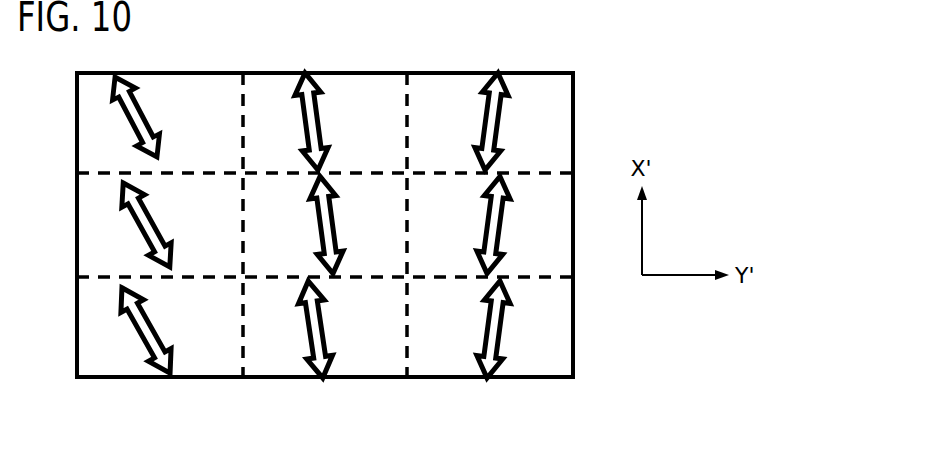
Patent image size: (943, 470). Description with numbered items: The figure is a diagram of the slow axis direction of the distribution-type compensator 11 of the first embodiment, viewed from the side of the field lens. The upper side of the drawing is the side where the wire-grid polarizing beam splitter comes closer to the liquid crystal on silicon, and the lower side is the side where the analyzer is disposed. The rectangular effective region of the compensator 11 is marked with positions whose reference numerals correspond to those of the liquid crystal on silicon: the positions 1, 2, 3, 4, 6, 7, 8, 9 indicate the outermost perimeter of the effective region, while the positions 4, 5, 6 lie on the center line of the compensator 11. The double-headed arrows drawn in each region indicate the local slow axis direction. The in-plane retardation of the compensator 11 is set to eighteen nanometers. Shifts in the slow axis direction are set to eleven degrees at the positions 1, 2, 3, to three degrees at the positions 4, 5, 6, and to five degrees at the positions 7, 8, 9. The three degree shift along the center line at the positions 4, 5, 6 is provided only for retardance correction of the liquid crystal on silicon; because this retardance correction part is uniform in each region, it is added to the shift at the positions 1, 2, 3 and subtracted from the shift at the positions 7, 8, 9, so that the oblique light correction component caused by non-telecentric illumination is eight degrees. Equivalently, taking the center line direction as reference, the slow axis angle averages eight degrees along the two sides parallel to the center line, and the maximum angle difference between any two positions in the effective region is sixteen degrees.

The position 1 is at (125, 117).
The position 2 is at (133, 225).
The position 3 is at (134, 330).
The position 4 is at (319, 121).
The position 5 is at (320, 225).
The position 6 is at (308, 329).
The position 7 is at (516, 121).
The position 8 is at (516, 225).
The position 9 is at (516, 329).
The distribution-type compensator 11 is at (133, 378).